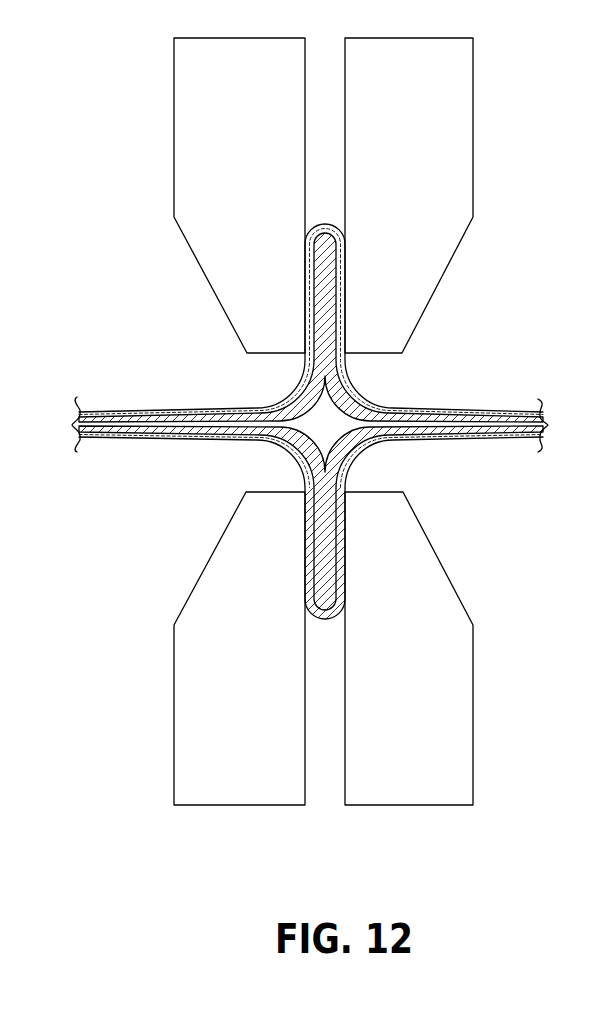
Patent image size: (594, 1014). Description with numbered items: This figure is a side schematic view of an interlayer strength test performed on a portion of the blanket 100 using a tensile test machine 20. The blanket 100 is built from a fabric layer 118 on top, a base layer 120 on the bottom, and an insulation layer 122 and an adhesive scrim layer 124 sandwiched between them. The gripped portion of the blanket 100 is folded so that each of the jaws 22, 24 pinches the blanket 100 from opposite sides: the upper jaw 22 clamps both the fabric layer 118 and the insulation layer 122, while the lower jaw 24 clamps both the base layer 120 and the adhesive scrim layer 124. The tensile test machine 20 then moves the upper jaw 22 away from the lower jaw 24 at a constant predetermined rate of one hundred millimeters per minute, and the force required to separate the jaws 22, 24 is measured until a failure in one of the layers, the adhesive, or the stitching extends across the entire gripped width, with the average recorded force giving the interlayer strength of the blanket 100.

The tensile test machine 20 is at (197, 110).
The upper jaw 22 is at (432, 122).
The lower jaw 24 is at (432, 593).
The blanket 100 is at (412, 412).
The fabric layer 118 is at (345, 362).
The base layer 120 is at (345, 557).
The insulation layer 122 is at (317, 362).
The adhesive scrim layer 124 is at (275, 437).